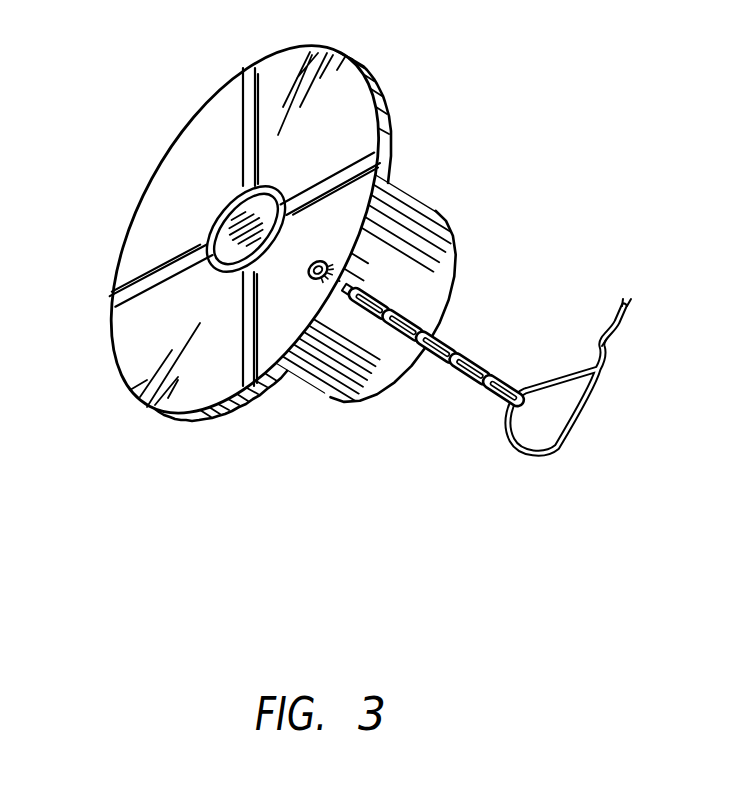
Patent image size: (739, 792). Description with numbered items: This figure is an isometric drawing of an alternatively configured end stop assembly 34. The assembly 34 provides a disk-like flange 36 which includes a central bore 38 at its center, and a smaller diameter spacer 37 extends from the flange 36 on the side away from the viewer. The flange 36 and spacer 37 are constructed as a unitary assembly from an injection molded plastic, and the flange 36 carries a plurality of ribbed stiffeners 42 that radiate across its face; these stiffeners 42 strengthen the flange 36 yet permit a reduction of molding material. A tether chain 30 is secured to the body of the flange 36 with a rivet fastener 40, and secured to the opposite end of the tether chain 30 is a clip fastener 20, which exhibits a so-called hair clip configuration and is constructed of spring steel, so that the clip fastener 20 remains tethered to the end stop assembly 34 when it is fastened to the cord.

The clip fastener 20 is at (612, 387).
The tether chain 30 is at (482, 366).
The end stop assembly 34 is at (362, 50).
The disk-like flange 36 is at (153, 181).
The spacer 37 is at (449, 232).
The central bore 38 is at (196, 236).
The rivet fastener 40 is at (321, 259).
The ribbed stiffeners 42 is at (150, 286).